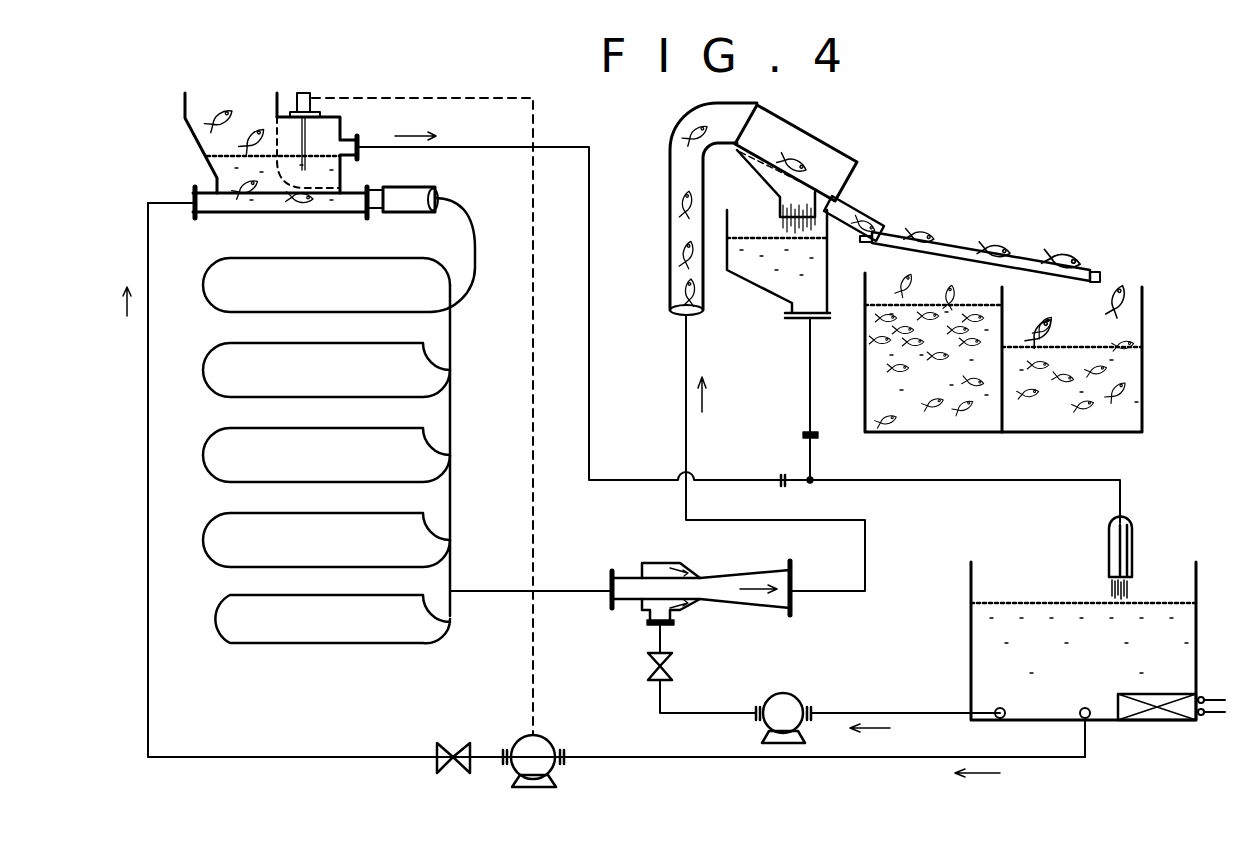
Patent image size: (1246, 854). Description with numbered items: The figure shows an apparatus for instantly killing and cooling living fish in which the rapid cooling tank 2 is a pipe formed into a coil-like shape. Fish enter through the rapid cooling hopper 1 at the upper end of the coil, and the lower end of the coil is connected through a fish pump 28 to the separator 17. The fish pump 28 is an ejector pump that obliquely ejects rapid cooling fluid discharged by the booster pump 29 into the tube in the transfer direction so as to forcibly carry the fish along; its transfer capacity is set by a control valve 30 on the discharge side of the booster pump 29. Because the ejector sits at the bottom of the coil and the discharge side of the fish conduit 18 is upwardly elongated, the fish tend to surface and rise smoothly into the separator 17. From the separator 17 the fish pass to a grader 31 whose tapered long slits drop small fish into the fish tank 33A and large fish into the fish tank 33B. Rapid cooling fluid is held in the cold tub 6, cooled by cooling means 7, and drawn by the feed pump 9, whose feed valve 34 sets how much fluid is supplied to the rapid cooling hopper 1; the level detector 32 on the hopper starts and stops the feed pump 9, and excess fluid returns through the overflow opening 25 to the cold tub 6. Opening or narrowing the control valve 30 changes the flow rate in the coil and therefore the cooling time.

The rapid cooling hopper 1 is at (185, 127).
The rapid cooling tank 2 is at (222, 307).
The cold tub 6 is at (971, 640).
The cooling means 7 is at (1147, 721).
The feed pump 9 is at (540, 736).
The separator 17 is at (806, 141).
The fish conduit 18 is at (670, 272).
The overflow opening 25 is at (340, 135).
The fish pump 28 is at (647, 562).
The booster pump 29 is at (795, 707).
The control valve 30 is at (651, 680).
The grader 31 is at (979, 243).
The level detector 32 is at (312, 98).
The fish tank 33A is at (945, 433).
The fish tank 33B is at (1142, 380).
The feed valve 34 is at (437, 748).